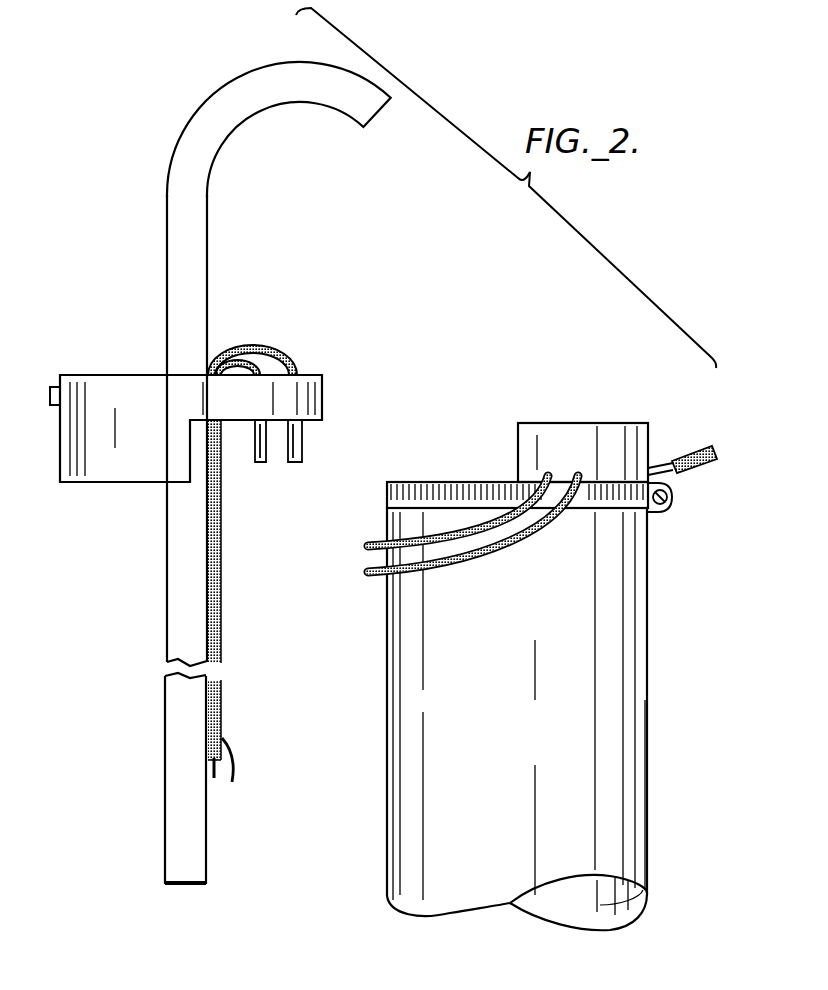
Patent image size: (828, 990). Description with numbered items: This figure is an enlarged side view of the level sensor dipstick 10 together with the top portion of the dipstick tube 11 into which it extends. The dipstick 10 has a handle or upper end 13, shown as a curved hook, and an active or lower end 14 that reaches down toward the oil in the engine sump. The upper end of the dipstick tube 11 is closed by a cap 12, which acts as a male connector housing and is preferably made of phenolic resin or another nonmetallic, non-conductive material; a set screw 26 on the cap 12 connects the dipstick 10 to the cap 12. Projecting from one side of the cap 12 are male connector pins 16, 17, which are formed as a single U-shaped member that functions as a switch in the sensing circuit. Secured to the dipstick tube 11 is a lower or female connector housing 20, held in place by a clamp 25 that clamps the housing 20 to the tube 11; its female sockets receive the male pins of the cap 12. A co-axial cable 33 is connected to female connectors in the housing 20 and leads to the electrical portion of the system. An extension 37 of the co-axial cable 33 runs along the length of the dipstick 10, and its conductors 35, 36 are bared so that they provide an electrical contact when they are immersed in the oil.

The dipstick 10 is at (166, 592).
The dipstick tube 11 is at (452, 690).
The cap 12 is at (142, 375).
The handle or upper end 13 is at (195, 112).
The active or lower end 14 is at (163, 780).
The male connector pin 16 is at (256, 465).
The male connector pin 17 is at (302, 462).
The female connector housing 20 is at (556, 418).
The clamp 25 is at (386, 493).
The set screw 26 is at (55, 386).
The co-axial cable 33 is at (690, 472).
The conductor 35 is at (253, 344).
The conductor 36 is at (296, 368).
The extension of the co-axial cable 37 is at (222, 570).